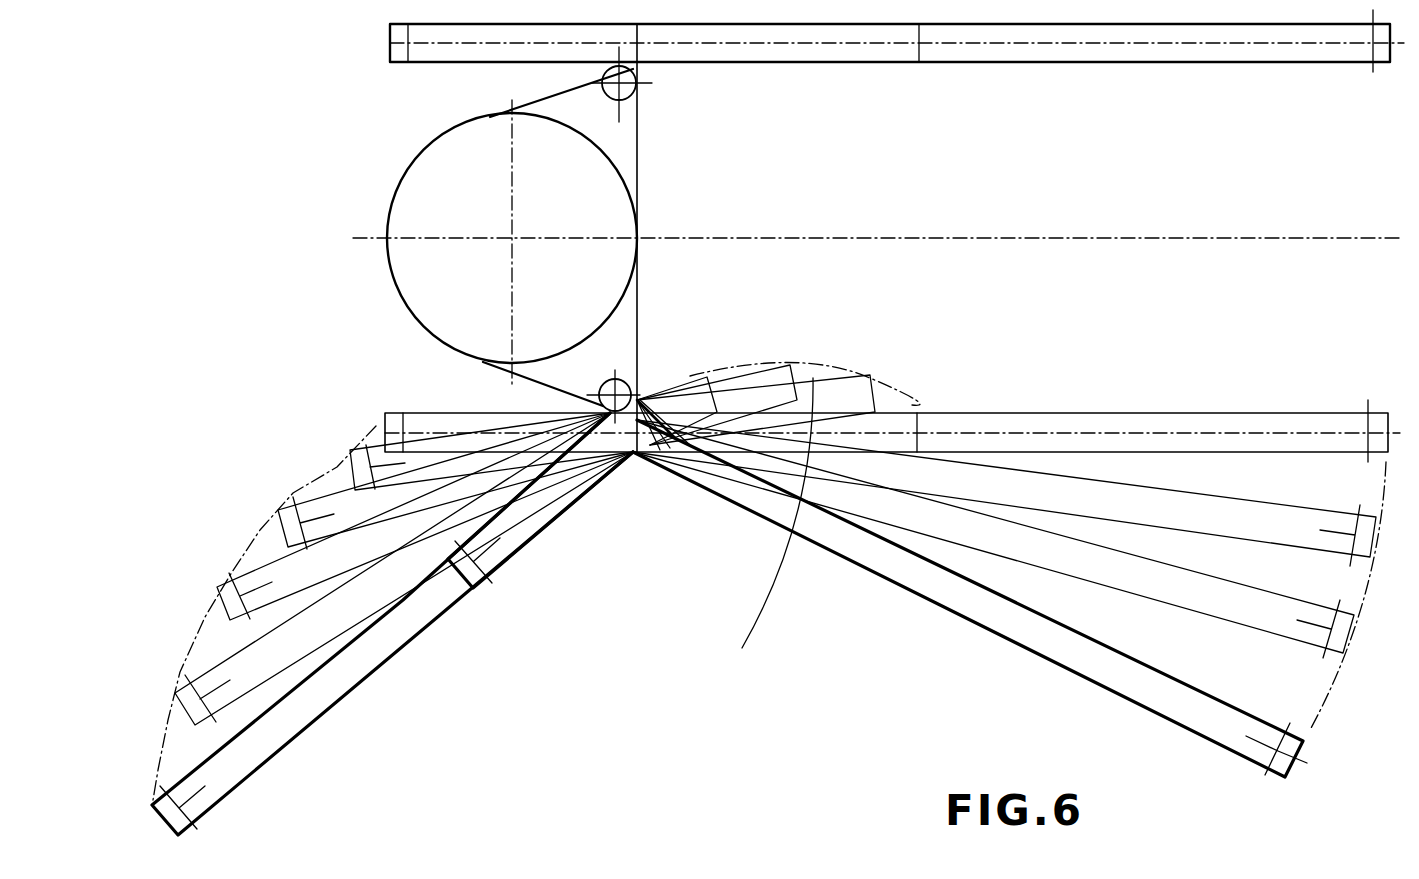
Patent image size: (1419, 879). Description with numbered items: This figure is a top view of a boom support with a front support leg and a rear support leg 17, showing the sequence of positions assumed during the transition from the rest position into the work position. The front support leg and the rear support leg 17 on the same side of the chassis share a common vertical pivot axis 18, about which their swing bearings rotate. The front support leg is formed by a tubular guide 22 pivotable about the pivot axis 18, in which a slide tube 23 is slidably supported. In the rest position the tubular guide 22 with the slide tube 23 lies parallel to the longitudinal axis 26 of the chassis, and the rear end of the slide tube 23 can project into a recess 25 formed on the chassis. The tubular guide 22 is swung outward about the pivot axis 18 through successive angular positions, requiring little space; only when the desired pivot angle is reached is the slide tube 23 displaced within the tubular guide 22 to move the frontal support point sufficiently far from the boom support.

The rear support leg 17 is at (868, 562).
The pivot axis 18 is at (632, 99).
The tubular guide 22 is at (492, 558).
The slide tube 23 is at (332, 677).
The recess 25 is at (763, 534).
The longitudinal axis 26 is at (353, 238).